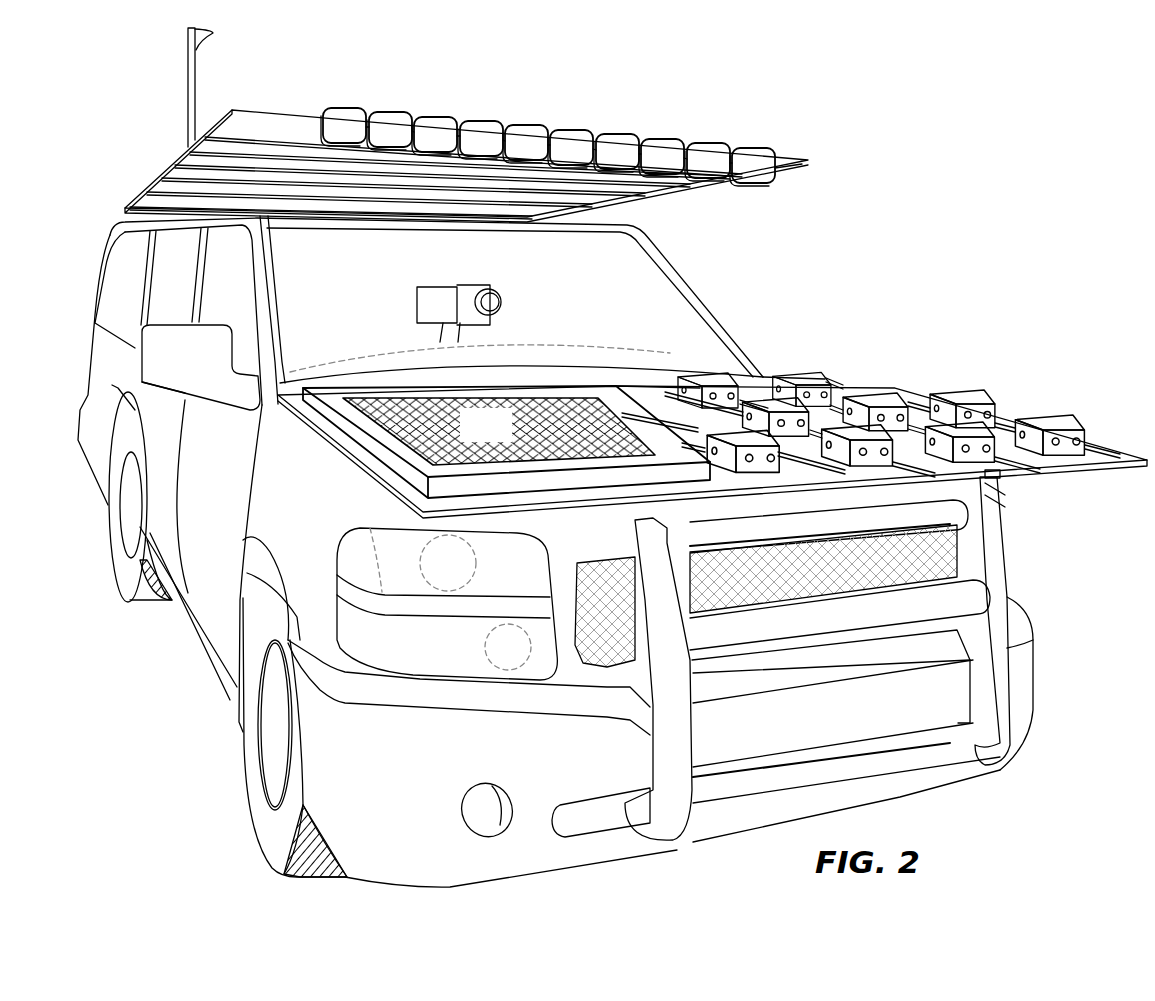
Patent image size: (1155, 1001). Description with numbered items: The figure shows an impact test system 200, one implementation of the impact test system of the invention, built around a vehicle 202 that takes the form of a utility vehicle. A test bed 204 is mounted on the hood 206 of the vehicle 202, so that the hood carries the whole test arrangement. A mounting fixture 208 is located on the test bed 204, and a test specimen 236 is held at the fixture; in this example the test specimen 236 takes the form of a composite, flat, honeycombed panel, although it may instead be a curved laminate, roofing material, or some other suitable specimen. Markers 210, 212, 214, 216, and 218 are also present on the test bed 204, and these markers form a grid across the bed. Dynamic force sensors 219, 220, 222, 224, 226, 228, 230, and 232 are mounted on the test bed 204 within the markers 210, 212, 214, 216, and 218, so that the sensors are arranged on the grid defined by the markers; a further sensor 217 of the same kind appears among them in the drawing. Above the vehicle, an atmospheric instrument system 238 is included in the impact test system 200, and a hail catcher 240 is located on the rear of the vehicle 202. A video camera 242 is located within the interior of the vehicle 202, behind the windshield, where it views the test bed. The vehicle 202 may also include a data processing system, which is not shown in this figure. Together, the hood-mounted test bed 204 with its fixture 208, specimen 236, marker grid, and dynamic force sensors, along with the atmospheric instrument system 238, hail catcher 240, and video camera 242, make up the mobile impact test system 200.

The impact test system 200 is at (872, 159).
The vehicle 202 is at (188, 640).
The test bed 204 is at (1105, 455).
The hood 206 is at (665, 745).
The mounting fixture 208 is at (377, 450).
The marker 210 is at (663, 398).
The marker 212 is at (993, 483).
The marker 214 is at (842, 385).
The marker 216 is at (917, 405).
The sensor 217 is at (785, 400).
The marker 218 is at (1003, 425).
The dynamic force sensor 219 is at (707, 378).
The dynamic force sensor 220 is at (790, 372).
The dynamic force sensor 222 is at (970, 398).
The dynamic force sensor 224 is at (763, 473).
The dynamic force sensor 226 is at (883, 466).
The dynamic force sensor 228 is at (880, 395).
The dynamic force sensor 230 is at (993, 477).
The dynamic force sensor 232 is at (1055, 418).
The test specimen 236 is at (507, 439).
The atmospheric instrument system 238 is at (160, 173).
The hail catcher 240 is at (205, 42).
The video camera 242 is at (417, 303).